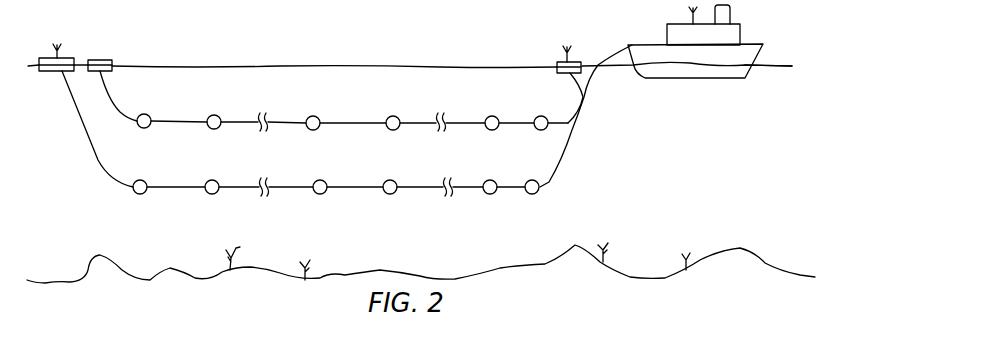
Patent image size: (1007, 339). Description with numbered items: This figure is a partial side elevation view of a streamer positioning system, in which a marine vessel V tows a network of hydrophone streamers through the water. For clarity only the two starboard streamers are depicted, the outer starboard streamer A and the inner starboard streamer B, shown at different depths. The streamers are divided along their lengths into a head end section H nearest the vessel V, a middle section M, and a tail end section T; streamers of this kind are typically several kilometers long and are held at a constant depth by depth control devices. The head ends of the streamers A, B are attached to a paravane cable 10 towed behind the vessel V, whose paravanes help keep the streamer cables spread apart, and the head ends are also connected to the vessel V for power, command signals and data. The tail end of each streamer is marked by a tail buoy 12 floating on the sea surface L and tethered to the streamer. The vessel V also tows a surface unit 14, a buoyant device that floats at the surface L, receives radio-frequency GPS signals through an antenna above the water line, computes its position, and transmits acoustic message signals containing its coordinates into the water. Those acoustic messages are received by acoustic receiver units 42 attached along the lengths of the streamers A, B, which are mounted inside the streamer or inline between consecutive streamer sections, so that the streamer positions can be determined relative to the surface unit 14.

The paravane cable 10 is at (597, 69).
The tail buoy 12 is at (70, 58).
The surface unit 14 is at (560, 60).
The acoustic receiver unit 42 is at (321, 117).
The outer starboard streamer A is at (282, 134).
The inner starboard streamer B is at (305, 101).
The marine vessel V is at (752, 42).
The sea surface L is at (792, 66).
The tail end section T is at (186, 237).
The middle section M is at (367, 235).
The head end section H is at (514, 243).